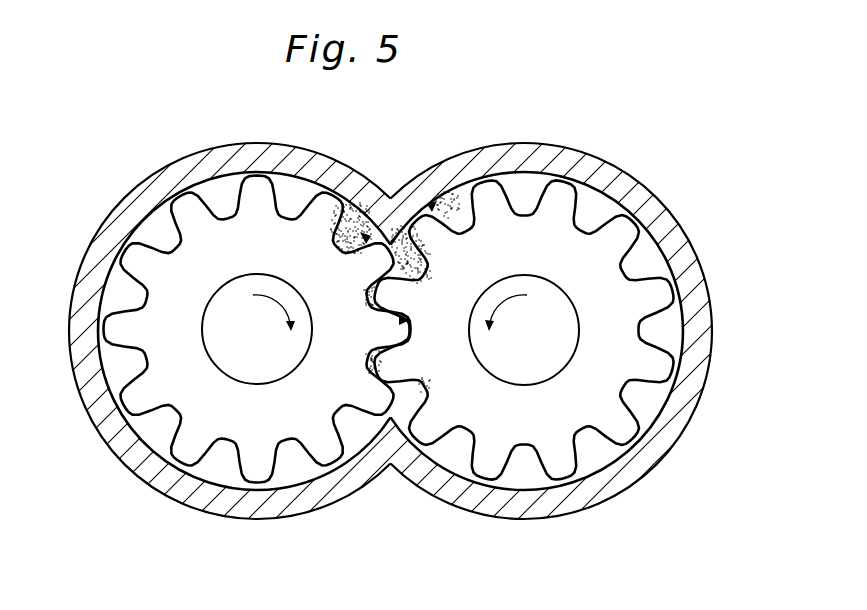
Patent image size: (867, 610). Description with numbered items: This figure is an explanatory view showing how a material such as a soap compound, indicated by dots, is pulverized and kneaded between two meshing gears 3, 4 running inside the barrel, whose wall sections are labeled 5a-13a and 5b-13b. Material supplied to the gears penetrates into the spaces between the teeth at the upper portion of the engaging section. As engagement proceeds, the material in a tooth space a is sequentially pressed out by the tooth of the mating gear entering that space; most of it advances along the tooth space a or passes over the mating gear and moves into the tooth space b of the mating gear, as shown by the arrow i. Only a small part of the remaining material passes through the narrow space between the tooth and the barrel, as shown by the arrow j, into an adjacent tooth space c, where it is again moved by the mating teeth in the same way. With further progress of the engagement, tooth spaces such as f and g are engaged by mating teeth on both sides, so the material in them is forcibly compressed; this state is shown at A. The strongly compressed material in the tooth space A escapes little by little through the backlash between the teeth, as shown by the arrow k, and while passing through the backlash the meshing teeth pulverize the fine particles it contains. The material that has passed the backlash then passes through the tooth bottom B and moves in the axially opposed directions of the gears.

The driven gear 3 is at (550, 357).
The drive gear 4 is at (233, 358).
The gear chamber wall (driven gear side) 5a-13a is at (617, 240).
The gear chamber wall (drive gear side) 5b-13b is at (137, 258).
The tooth space a is at (388, 243).
The tooth space b is at (334, 224).
The adjacent tooth space c is at (437, 203).
The arrow i is at (384, 236).
The arrow j is at (423, 203).
The tooth space f is at (362, 292).
The tooth space g is at (347, 240).
The arrow k is at (372, 303).
The compressed tooth space A is at (363, 300).
The tooth bottom B is at (417, 327).